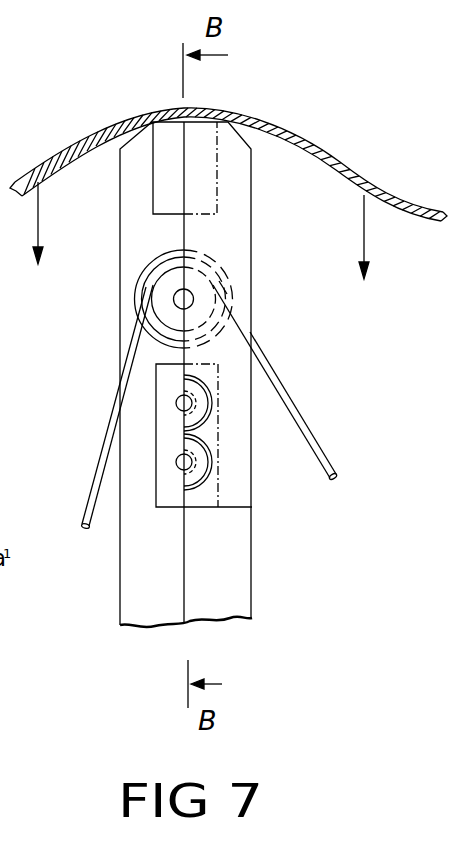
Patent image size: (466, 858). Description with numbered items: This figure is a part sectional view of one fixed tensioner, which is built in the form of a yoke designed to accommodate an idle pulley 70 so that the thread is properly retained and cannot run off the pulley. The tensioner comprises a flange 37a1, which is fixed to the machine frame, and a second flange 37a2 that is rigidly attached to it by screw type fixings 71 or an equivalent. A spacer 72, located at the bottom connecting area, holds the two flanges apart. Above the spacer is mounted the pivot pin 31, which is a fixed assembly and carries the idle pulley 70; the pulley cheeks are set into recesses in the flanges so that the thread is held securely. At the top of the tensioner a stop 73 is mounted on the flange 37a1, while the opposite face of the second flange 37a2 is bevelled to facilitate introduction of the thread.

The pivot pin 31 is at (188, 302).
The idle pulley 70 is at (150, 321).
The screw type fixings 71 is at (177, 460).
The spacer 72 is at (231, 479).
The stop 73 is at (158, 177).
The flange 37a1 is at (241, 577).
The second flange 37a2 is at (241, 242).